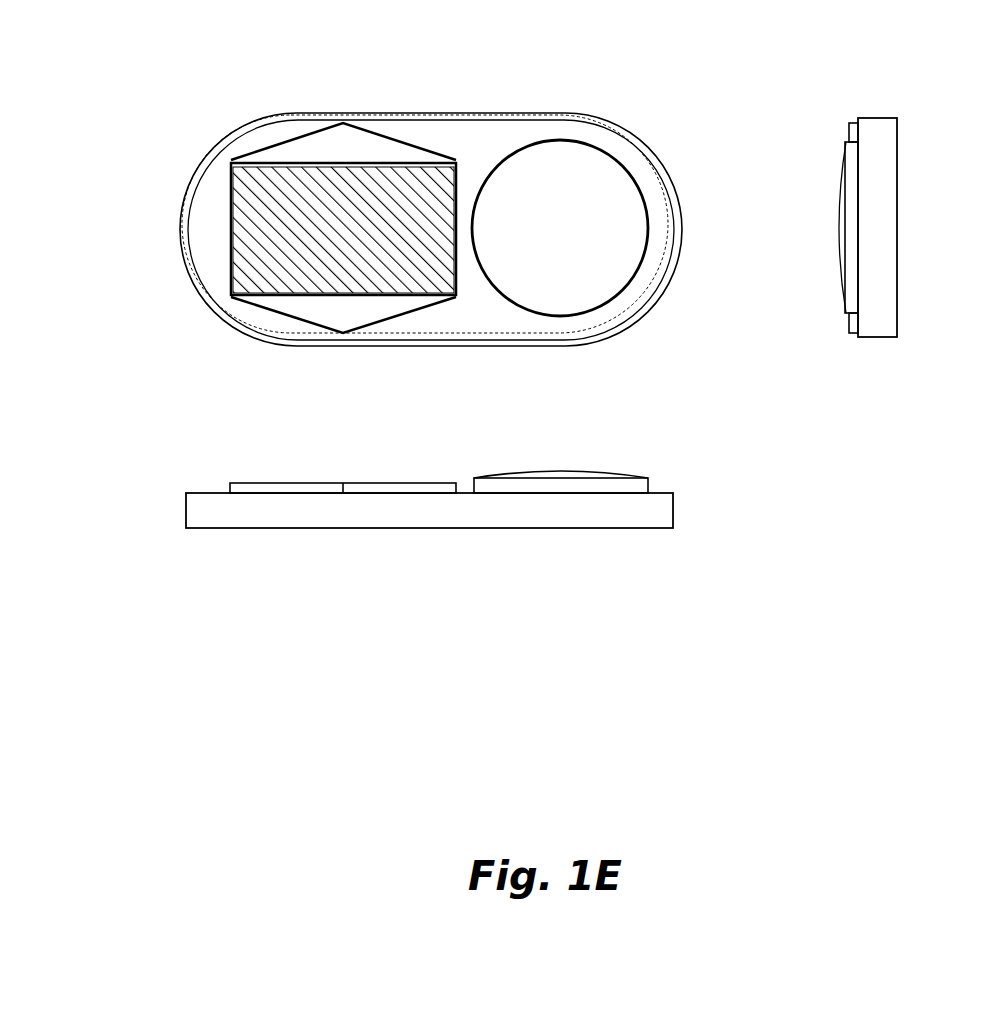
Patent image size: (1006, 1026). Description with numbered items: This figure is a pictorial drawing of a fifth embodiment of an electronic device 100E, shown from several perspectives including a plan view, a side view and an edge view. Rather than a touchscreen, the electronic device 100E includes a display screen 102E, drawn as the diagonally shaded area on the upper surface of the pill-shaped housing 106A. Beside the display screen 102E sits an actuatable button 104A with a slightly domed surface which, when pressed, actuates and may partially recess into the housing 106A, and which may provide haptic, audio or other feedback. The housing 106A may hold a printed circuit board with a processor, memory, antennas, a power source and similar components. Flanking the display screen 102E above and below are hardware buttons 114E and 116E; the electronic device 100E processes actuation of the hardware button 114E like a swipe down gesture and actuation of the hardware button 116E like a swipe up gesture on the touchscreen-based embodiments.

The electronic device 100E is at (268, 93).
The display screen 102E is at (268, 192).
The actuatable button 104A is at (560, 192).
The housing 106A is at (307, 343).
The hardware button 114E is at (372, 130).
The hardware button 116E is at (387, 320).